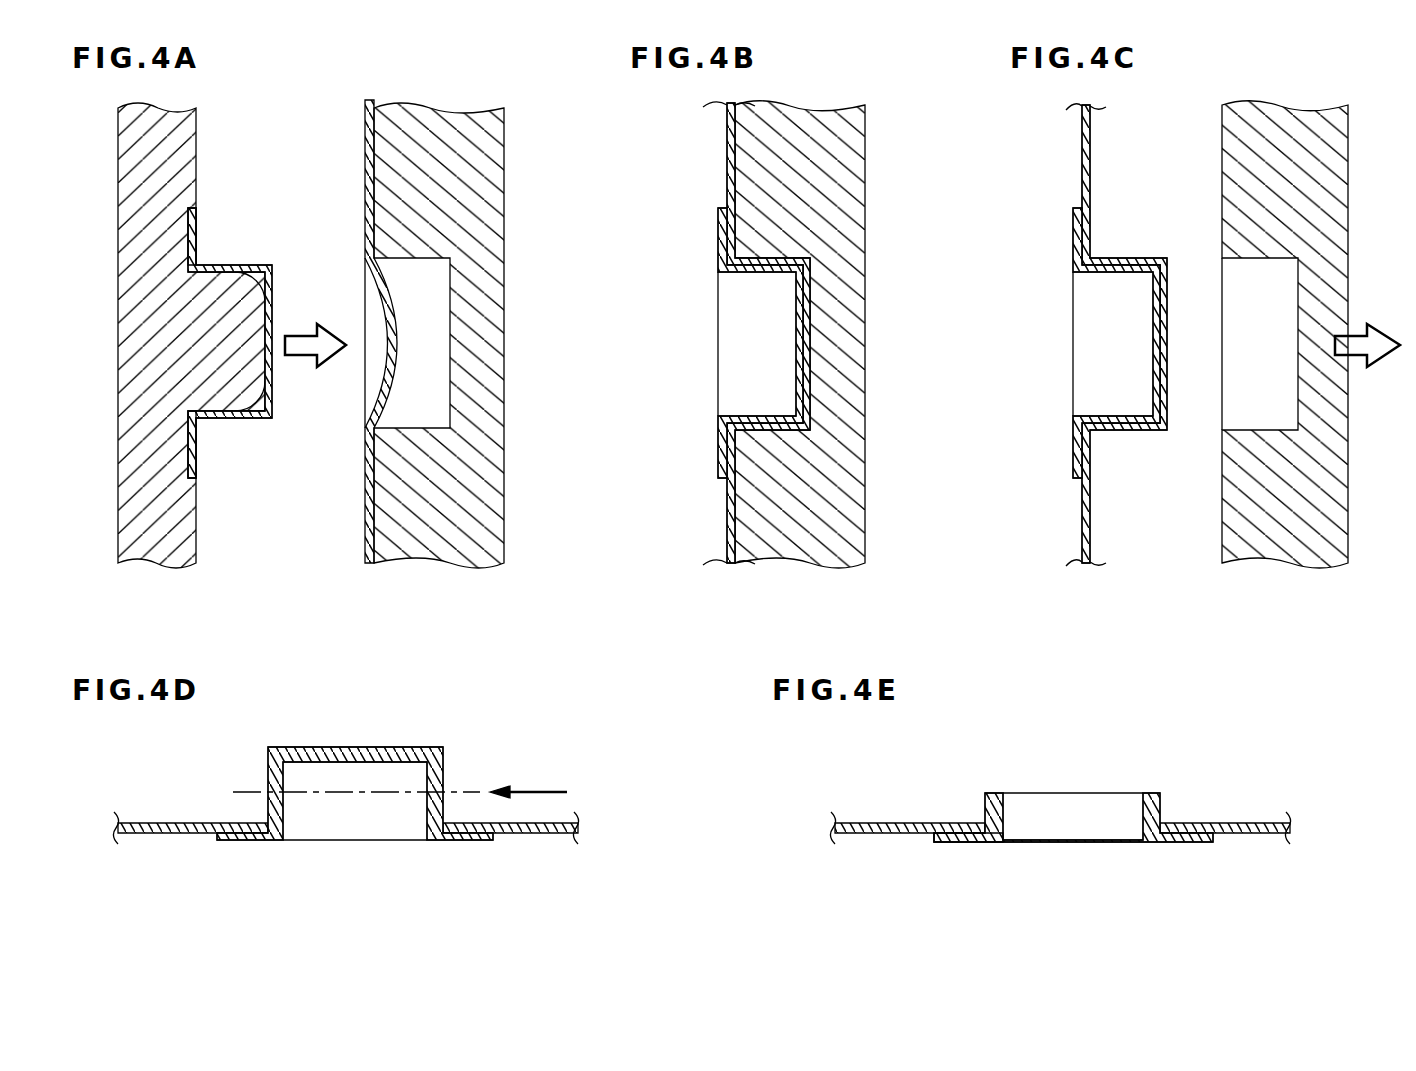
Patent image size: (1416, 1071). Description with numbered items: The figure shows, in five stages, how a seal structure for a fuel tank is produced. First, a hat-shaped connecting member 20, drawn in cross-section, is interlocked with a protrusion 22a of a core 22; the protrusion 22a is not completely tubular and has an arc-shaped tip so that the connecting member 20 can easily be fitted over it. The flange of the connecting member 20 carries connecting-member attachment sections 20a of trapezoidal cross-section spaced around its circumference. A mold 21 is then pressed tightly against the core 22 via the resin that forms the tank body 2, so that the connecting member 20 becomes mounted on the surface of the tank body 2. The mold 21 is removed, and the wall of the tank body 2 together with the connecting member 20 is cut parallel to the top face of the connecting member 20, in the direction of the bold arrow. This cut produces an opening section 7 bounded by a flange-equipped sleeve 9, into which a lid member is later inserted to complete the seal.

In FIG. 4A, the tank body 2 is at (365, 162).
In FIG. 4B, the tank body 2 is at (727, 159).
In FIG. 4C, the tank body 2 is at (1116, 335).
In FIG. 4D, the tank body 2 is at (520, 833).
In FIG. 4E, the tank body 2 is at (1258, 833).
In FIG. 4E, the opening section 7 is at (972, 815).
In FIG. 4E, the flange-equipped sleeve 9 is at (996, 852).
In FIG. 4A, the connecting member 20 is at (272, 289).
In FIG. 4B, the connecting member 20 is at (718, 262).
In FIG. 4C, the connecting member 20 is at (1116, 343).
In FIG. 4D, the connecting member 20 is at (443, 840).
In FIG. 4A, the connecting-member attachment section 20a is at (212, 239).
In FIG. 4A, the mold 21 is at (395, 530).
In FIG. 4B, the mold 21 is at (800, 334).
In FIG. 4C, the mold 21 is at (1285, 334).
In FIG. 4A, the core 22 is at (172, 544).
In FIG. 4A, the protrusion 22a is at (232, 348).